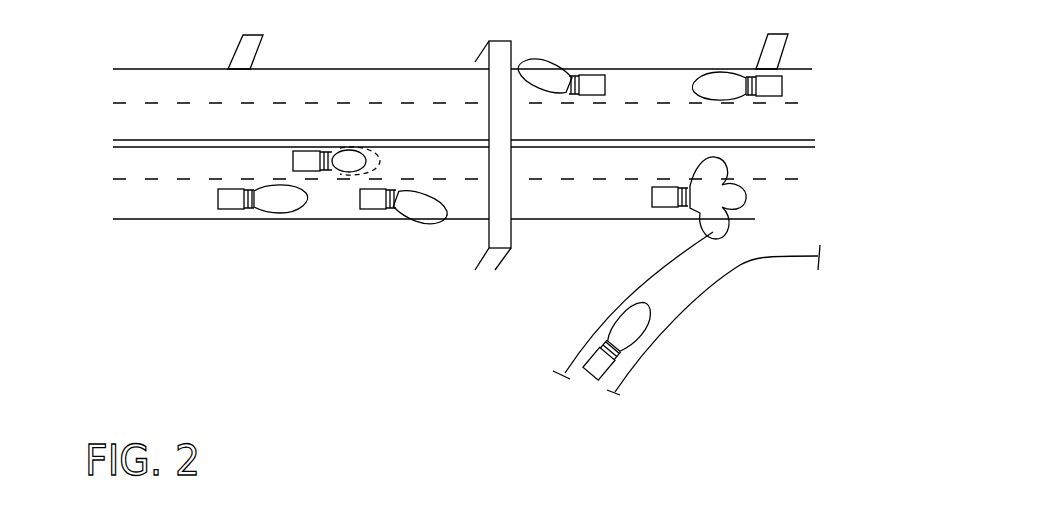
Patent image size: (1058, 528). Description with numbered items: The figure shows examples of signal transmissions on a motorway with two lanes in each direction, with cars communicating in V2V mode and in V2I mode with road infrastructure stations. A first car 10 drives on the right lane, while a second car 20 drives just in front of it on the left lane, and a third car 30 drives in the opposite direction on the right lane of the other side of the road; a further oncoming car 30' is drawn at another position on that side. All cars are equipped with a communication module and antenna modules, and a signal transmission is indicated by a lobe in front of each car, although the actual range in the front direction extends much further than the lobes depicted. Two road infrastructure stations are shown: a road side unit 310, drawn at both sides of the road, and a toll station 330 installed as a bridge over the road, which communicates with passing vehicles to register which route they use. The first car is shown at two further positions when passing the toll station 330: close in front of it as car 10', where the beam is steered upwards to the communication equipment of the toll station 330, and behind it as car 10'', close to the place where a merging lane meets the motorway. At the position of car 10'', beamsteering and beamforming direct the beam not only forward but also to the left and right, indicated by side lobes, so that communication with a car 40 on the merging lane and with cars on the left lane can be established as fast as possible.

The first transportation vehicle at first position 10 is at (244, 233).
The first transportation vehicle at second position 10' is at (397, 231).
The first transportation vehicle at third position 10'' is at (674, 192).
The surrounding transportation vehicle 20 is at (304, 161).
The surrounding transportation vehicle 30 is at (777, 84).
The oncoming vehicle at later position 30' is at (588, 75).
The surrounding transportation vehicle 40 is at (597, 366).
The road side unit 310 is at (252, 51).
The tolling station 330 is at (502, 240).